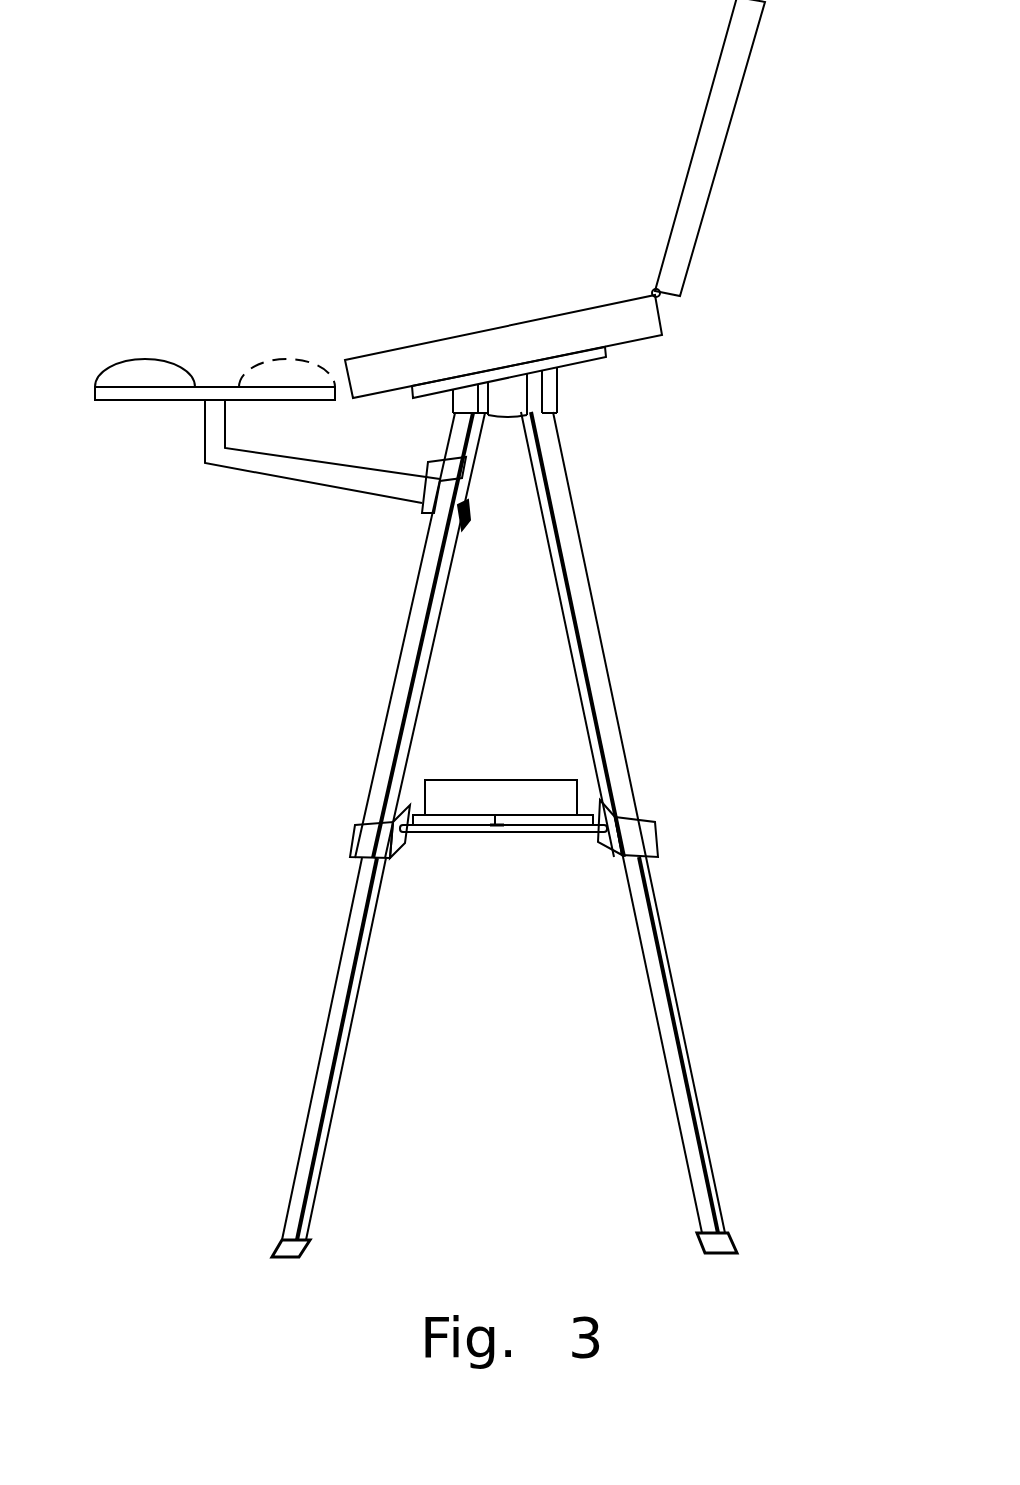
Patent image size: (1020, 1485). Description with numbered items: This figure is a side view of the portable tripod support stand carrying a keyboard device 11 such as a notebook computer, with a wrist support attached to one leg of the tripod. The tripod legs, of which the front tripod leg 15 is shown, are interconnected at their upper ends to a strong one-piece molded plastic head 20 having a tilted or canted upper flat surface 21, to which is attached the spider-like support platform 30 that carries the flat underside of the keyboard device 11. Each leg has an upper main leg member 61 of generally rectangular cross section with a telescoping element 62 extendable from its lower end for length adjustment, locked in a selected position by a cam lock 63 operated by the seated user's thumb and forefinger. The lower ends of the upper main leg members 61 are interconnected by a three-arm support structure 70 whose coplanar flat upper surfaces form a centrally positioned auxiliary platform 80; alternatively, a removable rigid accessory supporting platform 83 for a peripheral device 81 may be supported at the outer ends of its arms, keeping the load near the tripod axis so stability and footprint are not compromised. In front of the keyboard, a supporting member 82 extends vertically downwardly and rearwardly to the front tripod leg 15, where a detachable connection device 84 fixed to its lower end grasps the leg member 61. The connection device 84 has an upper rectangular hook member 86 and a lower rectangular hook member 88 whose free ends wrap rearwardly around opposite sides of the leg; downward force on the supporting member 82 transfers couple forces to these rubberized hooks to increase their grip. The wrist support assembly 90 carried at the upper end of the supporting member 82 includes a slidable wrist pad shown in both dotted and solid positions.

The keyboard device 11 is at (708, 188).
The support platform 30 is at (587, 362).
The head 20 is at (512, 398).
The upper flat surface 21 is at (483, 420).
The upper main leg member 61 is at (395, 748).
The telescoping element 62 is at (322, 1098).
The tripod leg 15 is at (348, 847).
The cam lock 63 is at (640, 845).
The peripheral device 81 is at (505, 800).
The auxiliary platform 80 is at (516, 834).
The three-arm support structure 70 is at (465, 842).
The accessory supporting platform 83 is at (497, 827).
The tray with cup holders 90 is at (155, 372).
The supporting member 82 is at (305, 484).
The upper rectangular hook member 86 is at (437, 471).
The connection device 84 is at (425, 512).
The lower rectangular hook member 88 is at (468, 518).